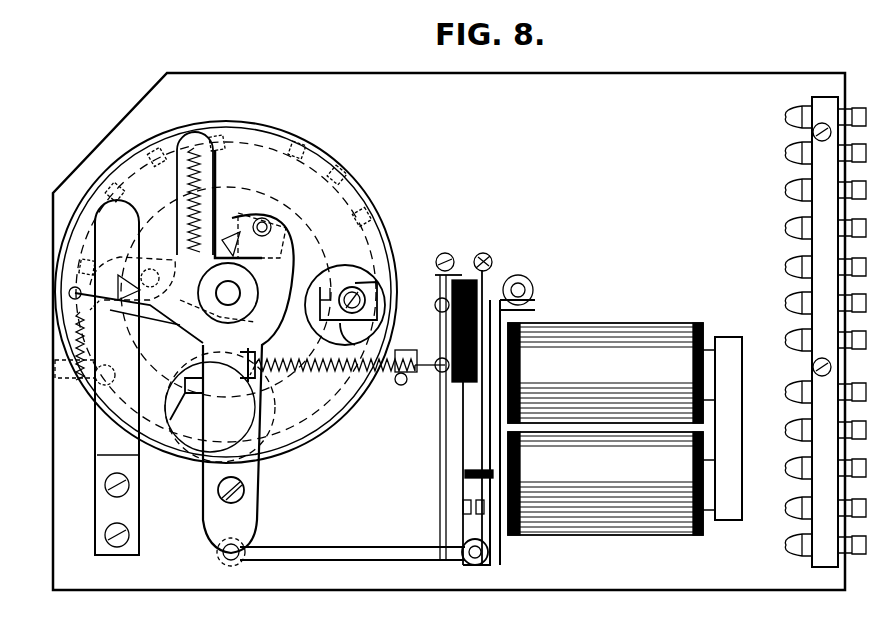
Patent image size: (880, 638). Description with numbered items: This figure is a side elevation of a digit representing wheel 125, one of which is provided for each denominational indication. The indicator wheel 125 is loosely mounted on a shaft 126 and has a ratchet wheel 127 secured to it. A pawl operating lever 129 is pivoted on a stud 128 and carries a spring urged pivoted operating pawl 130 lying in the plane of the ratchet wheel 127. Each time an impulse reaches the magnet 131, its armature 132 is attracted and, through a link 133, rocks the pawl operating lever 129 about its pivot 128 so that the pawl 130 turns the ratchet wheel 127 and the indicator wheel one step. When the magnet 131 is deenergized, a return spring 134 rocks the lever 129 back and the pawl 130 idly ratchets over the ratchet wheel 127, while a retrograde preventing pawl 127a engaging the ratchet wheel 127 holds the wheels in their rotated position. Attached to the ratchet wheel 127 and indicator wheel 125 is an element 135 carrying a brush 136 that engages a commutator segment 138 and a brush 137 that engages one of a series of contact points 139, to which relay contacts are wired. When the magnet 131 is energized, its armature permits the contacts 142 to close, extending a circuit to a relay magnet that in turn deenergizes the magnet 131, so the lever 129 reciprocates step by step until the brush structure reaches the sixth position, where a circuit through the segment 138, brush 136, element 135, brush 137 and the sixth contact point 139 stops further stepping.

The digit representing wheel 125 is at (328, 440).
The shaft 126 is at (265, 290).
The ratchet wheel 127 is at (200, 324).
The retrograde preventing pawl 127a is at (118, 372).
The stud 128 is at (244, 490).
The pawl operating lever 129 is at (238, 425).
The operating pawl 130 is at (236, 237).
The magnet 131 is at (608, 400).
The armature 132 is at (494, 440).
The link 133 is at (350, 550).
The return spring 134 is at (330, 395).
The element 135 is at (178, 240).
The brush 136 is at (252, 395).
The brush 137 is at (215, 176).
The commutator segment 138 is at (178, 432).
The contact points 139 is at (322, 167).
The contacts 142 is at (467, 515).